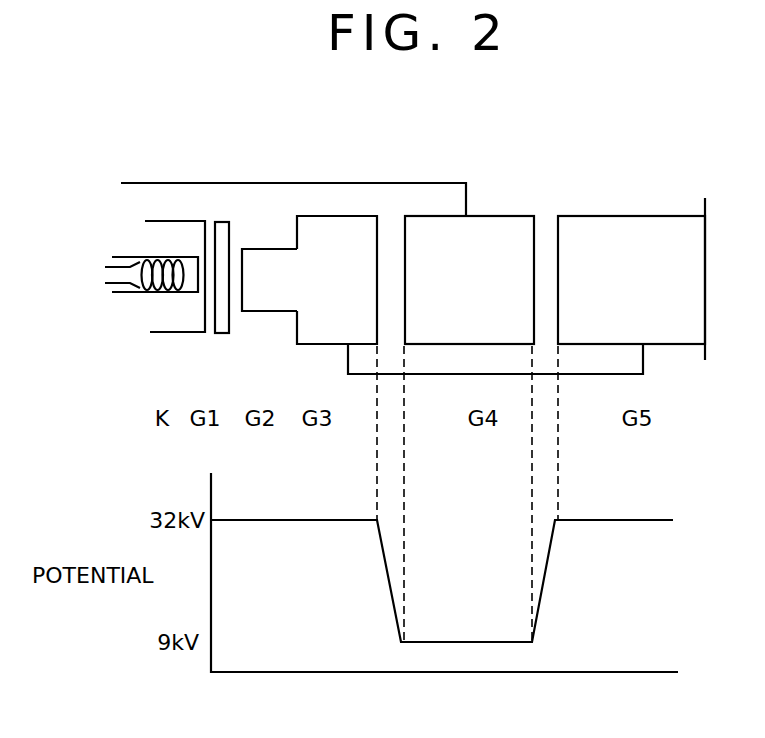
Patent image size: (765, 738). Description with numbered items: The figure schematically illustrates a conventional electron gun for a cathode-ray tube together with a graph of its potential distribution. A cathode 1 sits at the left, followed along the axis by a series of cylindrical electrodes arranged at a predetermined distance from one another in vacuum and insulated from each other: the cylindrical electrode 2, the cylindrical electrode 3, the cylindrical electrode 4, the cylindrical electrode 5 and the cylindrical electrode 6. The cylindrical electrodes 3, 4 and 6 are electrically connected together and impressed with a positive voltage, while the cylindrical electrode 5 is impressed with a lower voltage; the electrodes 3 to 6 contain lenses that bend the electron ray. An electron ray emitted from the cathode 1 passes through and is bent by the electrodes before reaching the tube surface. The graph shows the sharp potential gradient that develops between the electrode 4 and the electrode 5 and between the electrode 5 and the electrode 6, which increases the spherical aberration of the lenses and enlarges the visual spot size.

The cathode 1 is at (122, 294).
The cylindrical electrode G1 2 is at (223, 224).
The cylindrical electrode G2 3 is at (267, 258).
The cylindrical electrode G3 4 is at (345, 225).
The cylindrical electrode G4 5 is at (492, 227).
The cylindrical electrode G5 6 is at (603, 227).